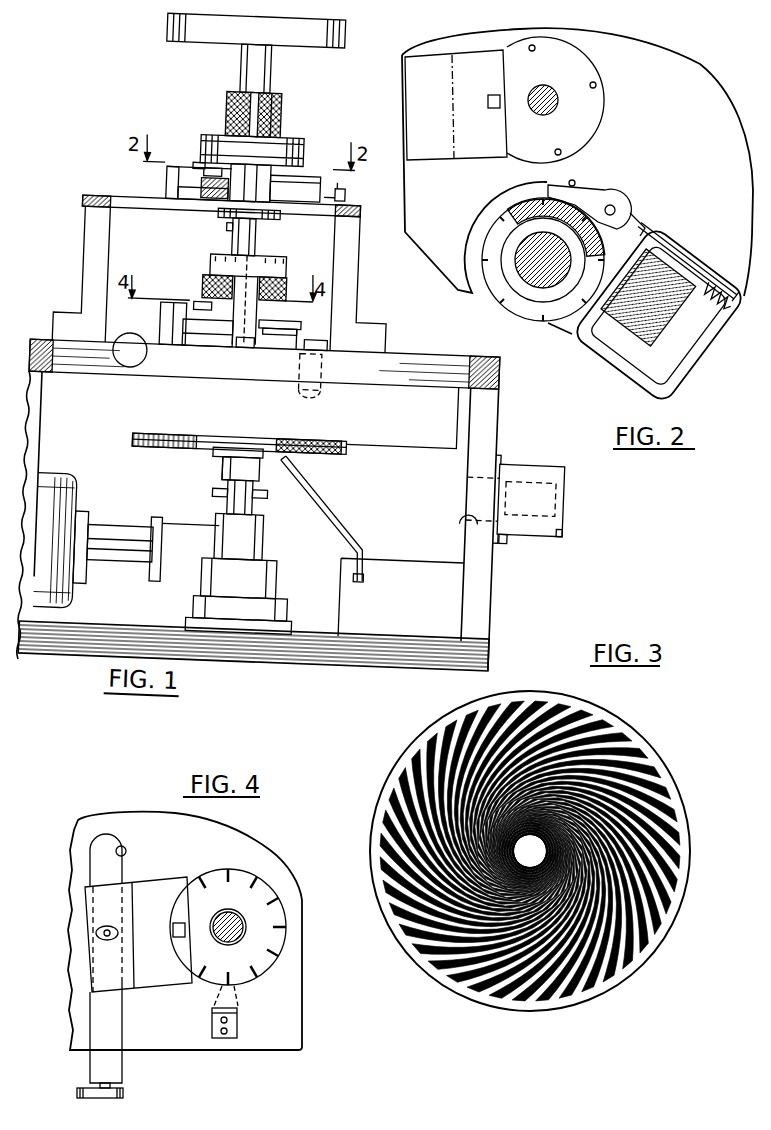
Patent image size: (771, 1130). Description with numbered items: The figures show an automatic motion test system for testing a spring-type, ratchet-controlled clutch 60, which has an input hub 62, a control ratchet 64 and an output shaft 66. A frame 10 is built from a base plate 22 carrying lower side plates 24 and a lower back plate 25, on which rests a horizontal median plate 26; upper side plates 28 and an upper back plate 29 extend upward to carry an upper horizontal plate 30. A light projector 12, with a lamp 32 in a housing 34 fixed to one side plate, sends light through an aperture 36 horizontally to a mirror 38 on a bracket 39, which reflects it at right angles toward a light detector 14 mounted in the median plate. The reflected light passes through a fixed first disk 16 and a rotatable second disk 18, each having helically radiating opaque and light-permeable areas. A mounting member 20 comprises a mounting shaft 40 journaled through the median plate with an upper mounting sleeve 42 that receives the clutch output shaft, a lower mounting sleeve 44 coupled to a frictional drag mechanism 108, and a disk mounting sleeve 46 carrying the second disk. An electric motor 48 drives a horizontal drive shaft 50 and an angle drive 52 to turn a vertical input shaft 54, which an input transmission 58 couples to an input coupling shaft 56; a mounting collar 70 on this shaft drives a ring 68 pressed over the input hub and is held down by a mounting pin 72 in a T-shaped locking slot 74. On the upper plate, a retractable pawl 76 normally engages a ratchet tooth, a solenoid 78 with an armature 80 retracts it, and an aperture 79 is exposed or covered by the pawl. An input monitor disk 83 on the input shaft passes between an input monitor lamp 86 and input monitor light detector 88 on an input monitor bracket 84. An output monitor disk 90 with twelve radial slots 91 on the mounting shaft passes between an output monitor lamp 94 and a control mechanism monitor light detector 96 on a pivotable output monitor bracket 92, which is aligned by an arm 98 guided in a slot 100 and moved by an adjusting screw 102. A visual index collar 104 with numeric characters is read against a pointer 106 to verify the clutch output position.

In FIG. 1, the support structure or frame 10 is at (397, 337).
In FIG. 1, the light projector 12 is at (549, 494).
In FIG. 1, the light detector 14 is at (330, 348).
In FIG. 1, the first optically apertured member or disk 16 is at (294, 429).
In FIG. 3, the first optically apertured member or disk 16 is at (530, 847).
In FIG. 1, the second optically apertured member or disk 18 is at (345, 448).
In FIG. 3, the second optically apertured member or disk 18 is at (600, 710).
In FIG. 1, the mounting member 20 is at (235, 289).
In FIG. 1, the base plate 22 is at (434, 628).
In FIG. 1, the lower side plates 24 is at (44, 446).
In FIG. 1, the lower back plate 25 is at (430, 507).
In FIG. 1, the horizontal median plate 26 is at (454, 330).
In FIG. 4, the horizontal median plate 26 is at (284, 1037).
In FIG. 1, the upper side plates 28 is at (80, 276).
In FIG. 1, the upper back plate 29 is at (147, 259).
In FIG. 1, the upper horizontal plate 30 is at (357, 208).
In FIG. 2, the upper horizontal plate 30 is at (679, 116).
In FIG. 1, the lamp 32 is at (514, 532).
In FIG. 1, the housing 34 is at (570, 522).
In FIG. 1, the aperture 36 is at (468, 512).
In FIG. 1, the light reflecting member or mirror 38 is at (334, 519).
In FIG. 1, the bracket 39 is at (365, 541).
In FIG. 1, the rotatable mounting shaft 40 is at (233, 500).
In FIG. 1, the upper mounting sleeve 42 is at (252, 240).
In FIG. 1, the lower mounting sleeve 44 is at (226, 541).
In FIG. 1, the disk mounting sleeve 46 is at (218, 446).
In FIG. 1, the electric motor 48 is at (84, 500).
In FIG. 1, the horizontal drive shaft 50 is at (140, 531).
In FIG. 1, the angle drive 52 is at (176, 580).
In FIG. 1, the vertical input shaft 54 is at (226, 472).
In FIG. 2, the vertical input shaft 54 is at (555, 92).
In FIG. 1, the input coupling shaft 56 is at (232, 68).
In FIG. 1, the input transmission 58 is at (158, 35).
In FIG. 1, the spring-type, ratchet-controlled clutch 60 is at (214, 222).
In FIG. 1, the input hub or rotary input mechanism 62 is at (268, 170).
In FIG. 1, the control ratchet or rotary control mechanism 64 is at (270, 160).
In FIG. 2, the control ratchet or rotary control mechanism 64 is at (496, 292).
In FIG. 1, the output shaft or rotary output mechanism 66 is at (226, 228).
In FIG. 1, the ring 68 is at (190, 165).
In FIG. 1, the mounting collar 70 is at (252, 101).
In FIG. 1, the mounting pin 72 is at (262, 93).
In FIG. 1, the T-shaped locking slot 74 is at (272, 115).
In FIG. 2, the retractable pawl 76 is at (598, 193).
In FIG. 1, the electrically actuatable solenoid 78 is at (314, 186).
In FIG. 2, the electrically actuatable solenoid 78 is at (624, 317).
In FIG. 2, the aperture 79 is at (575, 181).
In FIG. 1, the armature 80 is at (340, 192).
In FIG. 2, the armature 80 is at (656, 232).
In FIG. 1, the input monitor disk 83 is at (160, 182).
In FIG. 2, the input monitor disk 83 is at (598, 80).
In FIG. 1, the input monitor bracket 84 is at (152, 214).
In FIG. 2, the input monitor bracket 84 is at (438, 158).
In FIG. 1, the input monitor lamp 86 is at (195, 198).
In FIG. 1, the input monitor light detector 88 is at (197, 170).
In FIG. 2, the input monitor light detector 88 is at (491, 95).
In FIG. 1, the output or rotary control mechanism monitor disk 90 is at (307, 339).
In FIG. 4, the output or rotary control mechanism monitor disk 90 is at (247, 911).
In FIG. 1, the radially directed slots 91 is at (288, 334).
In FIG. 4, the radially directed slots 91 is at (233, 869).
In FIG. 1, the output monitor bracket 92 is at (160, 328).
In FIG. 4, the output monitor bracket 92 is at (160, 886).
In FIG. 1, the output monitor lamp 94 is at (187, 348).
In FIG. 1, the control mechanism monitor light detector 96 is at (195, 305).
In FIG. 4, the control mechanism monitor light detector 96 is at (174, 929).
In FIG. 4, the arm 98 is at (122, 1003).
In FIG. 4, the slot 100 is at (124, 850).
In FIG. 1, the adjusting screw 102 is at (113, 357).
In FIG. 4, the adjusting screw 102 is at (128, 1096).
In FIG. 1, the visual index collar 104 is at (208, 266).
In FIG. 1, the pointer 106 is at (244, 348).
In FIG. 4, the pointer 106 is at (238, 1018).
In FIG. 1, the drag mechanism 108 is at (270, 580).